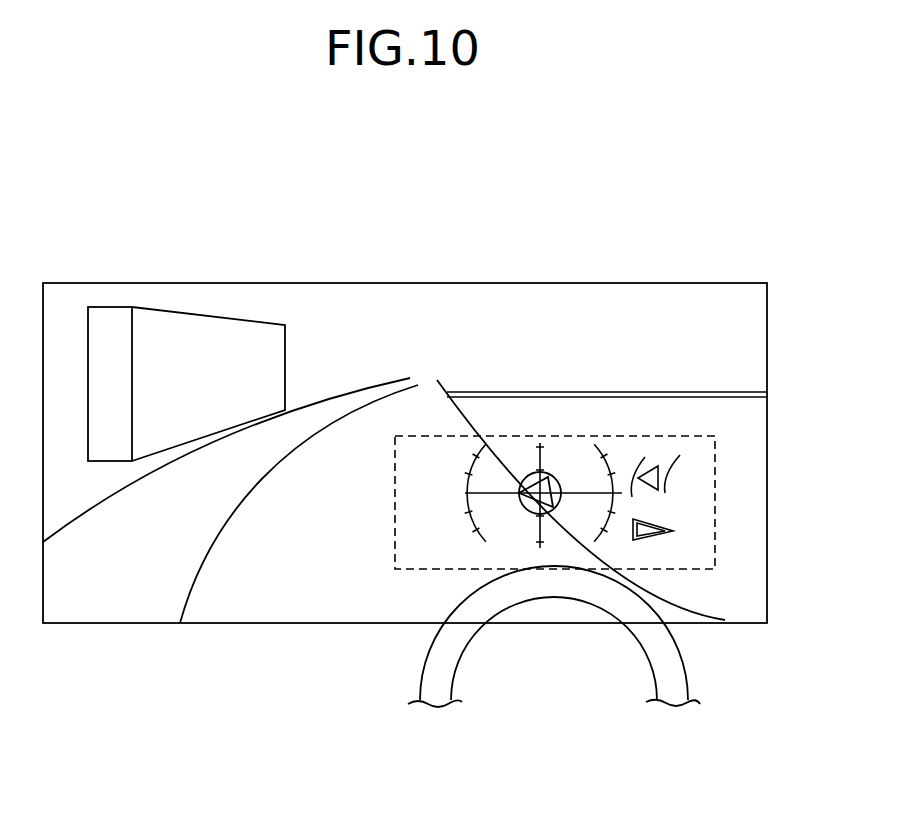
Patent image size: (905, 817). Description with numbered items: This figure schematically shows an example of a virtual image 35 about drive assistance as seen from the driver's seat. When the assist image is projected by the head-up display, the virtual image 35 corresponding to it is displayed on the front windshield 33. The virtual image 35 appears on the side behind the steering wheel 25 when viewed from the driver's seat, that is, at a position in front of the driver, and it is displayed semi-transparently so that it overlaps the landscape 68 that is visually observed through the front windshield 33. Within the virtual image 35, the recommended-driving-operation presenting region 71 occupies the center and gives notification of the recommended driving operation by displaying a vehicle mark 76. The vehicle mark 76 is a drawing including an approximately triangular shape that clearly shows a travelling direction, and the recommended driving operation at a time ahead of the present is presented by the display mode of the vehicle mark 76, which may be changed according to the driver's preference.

The front windshield 33 is at (540, 282).
The landscape 68 is at (550, 330).
The virtual image 35 is at (613, 485).
The recommended-driving-operation presenting region 71 is at (563, 459).
The vehicle mark 76 is at (557, 502).
The steering wheel 25 is at (455, 648).